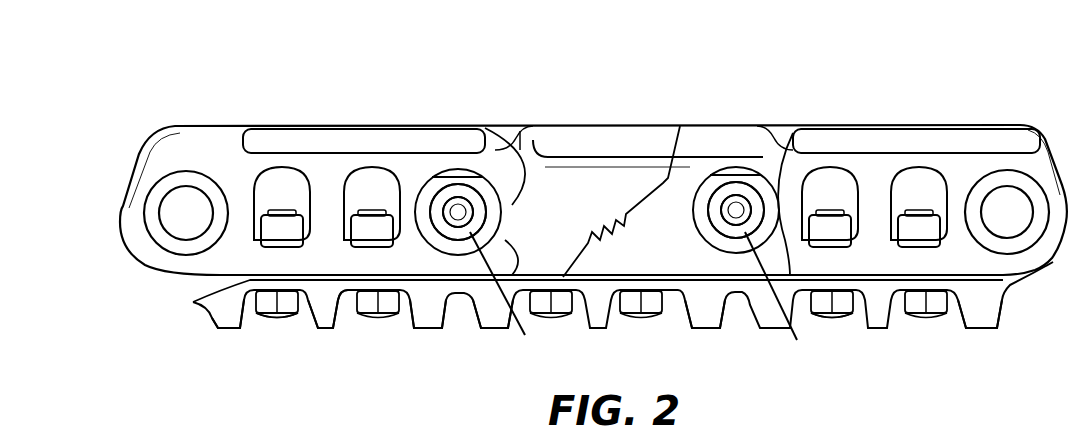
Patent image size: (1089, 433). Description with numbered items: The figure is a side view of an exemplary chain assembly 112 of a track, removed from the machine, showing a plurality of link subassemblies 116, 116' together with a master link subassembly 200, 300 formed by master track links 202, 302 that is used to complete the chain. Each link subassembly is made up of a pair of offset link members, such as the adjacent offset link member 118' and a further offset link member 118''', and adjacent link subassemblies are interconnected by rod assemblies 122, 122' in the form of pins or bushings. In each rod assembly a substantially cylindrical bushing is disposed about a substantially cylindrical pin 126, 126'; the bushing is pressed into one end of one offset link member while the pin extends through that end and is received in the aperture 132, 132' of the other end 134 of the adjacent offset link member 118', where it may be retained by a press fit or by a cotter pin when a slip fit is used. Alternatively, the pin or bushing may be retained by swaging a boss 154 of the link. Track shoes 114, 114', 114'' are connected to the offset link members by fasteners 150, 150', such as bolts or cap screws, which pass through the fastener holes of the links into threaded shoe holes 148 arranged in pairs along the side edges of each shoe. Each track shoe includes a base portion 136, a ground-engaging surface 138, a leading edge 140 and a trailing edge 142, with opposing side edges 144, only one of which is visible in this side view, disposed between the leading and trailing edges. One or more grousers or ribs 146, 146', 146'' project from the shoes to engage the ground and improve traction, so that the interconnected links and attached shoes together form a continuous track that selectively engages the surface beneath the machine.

The chain assembly 112 is at (972, 100).
The track shoe 114 is at (447, 357).
The track shoe 114' is at (989, 341).
The track shoe 114'' is at (715, 341).
The link subassembly 116 is at (364, 100).
The link subassembly 116' is at (916, 99).
The adjacent offset link member 118' is at (304, 154).
The offset link member 118''' is at (874, 154).
The rod assembly 122 is at (479, 152).
The rod assembly 122' is at (755, 148).
The pin 126 is at (452, 167).
The pin 126' is at (734, 167).
The aperture 132 is at (509, 294).
The aperture 132' is at (779, 297).
The other end 134 is at (527, 142).
The base portion 136 is at (330, 318).
The ground-engaging surface 138 is at (263, 325).
The leading edge 140 is at (510, 262).
The trailing edge 142 is at (190, 303).
The side edge 144 is at (432, 325).
The grouser 146 is at (339, 356).
The grouser 146' is at (490, 336).
The grouser 146'' is at (205, 344).
The threaded shoe hole 148 is at (373, 280).
The fastener 150 is at (288, 354).
The fastener 150' is at (849, 348).
The boss 154 is at (455, 189).
The master track link 202 is at (644, 110).
The master link subassembly 200 is at (644, 110).
The master track link 302 is at (644, 110).
The master link subassembly 300 is at (630, 140).